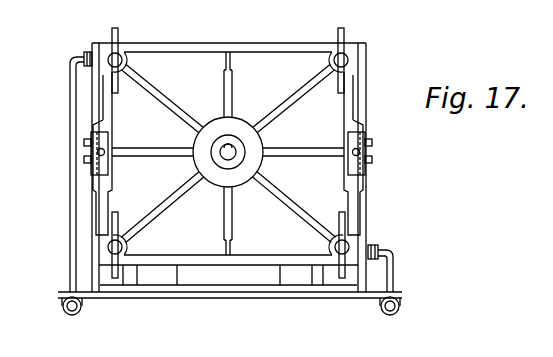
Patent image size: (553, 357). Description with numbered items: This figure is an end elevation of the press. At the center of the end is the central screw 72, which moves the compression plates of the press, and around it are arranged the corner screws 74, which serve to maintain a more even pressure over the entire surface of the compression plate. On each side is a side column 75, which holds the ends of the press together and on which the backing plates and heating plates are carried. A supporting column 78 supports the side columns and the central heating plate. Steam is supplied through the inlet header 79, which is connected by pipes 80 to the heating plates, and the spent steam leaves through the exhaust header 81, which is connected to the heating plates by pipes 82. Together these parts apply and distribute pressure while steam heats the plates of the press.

The central screw 72 is at (235, 162).
The corner screws 74 is at (119, 57).
The side column 75 is at (366, 160).
The supporting column 78 is at (363, 223).
The inlet header 79 is at (53, 312).
The pipes 80 is at (70, 86).
The exhaust header 81 is at (400, 304).
The pipes 82 is at (395, 271).